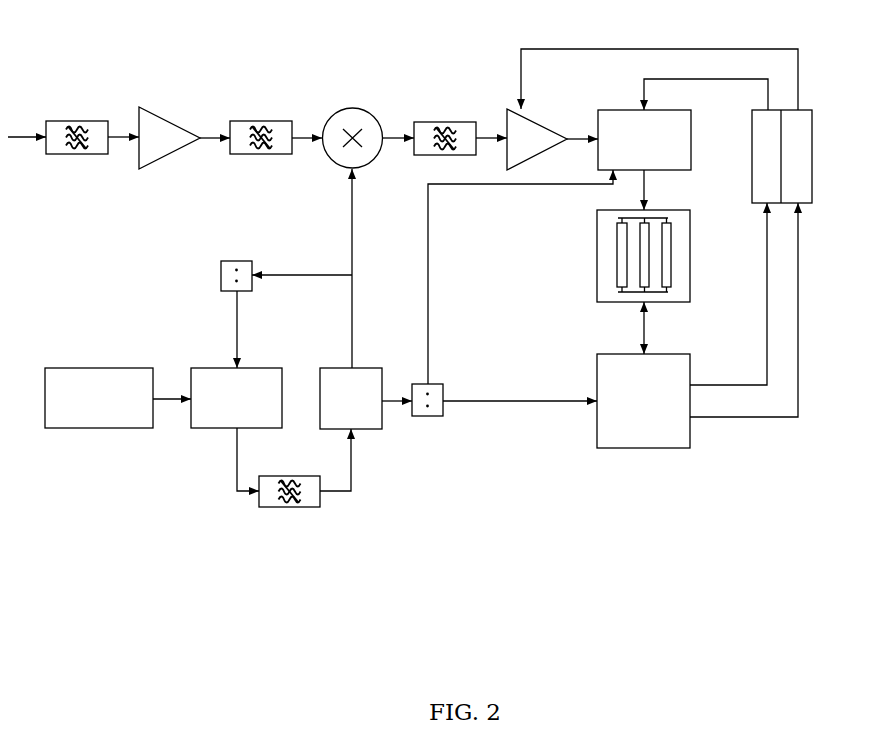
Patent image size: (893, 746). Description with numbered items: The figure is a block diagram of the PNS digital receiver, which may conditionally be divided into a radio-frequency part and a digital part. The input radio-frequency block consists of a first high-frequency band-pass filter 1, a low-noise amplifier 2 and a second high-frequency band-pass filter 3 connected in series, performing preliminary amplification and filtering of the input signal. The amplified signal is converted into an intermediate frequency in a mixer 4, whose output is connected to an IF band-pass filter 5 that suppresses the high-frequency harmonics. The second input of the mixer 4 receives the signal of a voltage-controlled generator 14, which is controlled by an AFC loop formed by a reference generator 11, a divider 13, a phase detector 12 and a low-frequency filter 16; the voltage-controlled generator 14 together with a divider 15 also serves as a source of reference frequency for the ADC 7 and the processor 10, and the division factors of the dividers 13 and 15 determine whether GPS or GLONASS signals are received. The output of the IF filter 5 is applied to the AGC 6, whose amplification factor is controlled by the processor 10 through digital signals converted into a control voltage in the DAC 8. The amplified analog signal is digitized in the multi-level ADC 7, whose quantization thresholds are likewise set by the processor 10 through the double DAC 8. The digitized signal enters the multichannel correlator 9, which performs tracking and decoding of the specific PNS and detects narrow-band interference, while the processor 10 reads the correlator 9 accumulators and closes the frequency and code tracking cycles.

The first high-frequency band-pass filter 1 is at (62, 120).
The low-noise amplifier 2 is at (155, 112).
The second high-frequency band-pass filter 3 is at (247, 120).
The mixer 4 is at (353, 108).
The IF band-pass filter 5 is at (430, 122).
The AGC 6 is at (537, 119).
The analog-to-digital converter 7 is at (622, 110).
The digital-to-analog converter 8 is at (813, 133).
The multichannel correlator 9 is at (690, 260).
The processor 10 is at (673, 354).
The reference generator 11 is at (95, 368).
The phase detector 12 is at (253, 368).
The divider 13 is at (241, 261).
The voltage-controlled generator 14 is at (356, 368).
The divider 15 is at (435, 384).
The low-frequency filter 16 is at (290, 507).